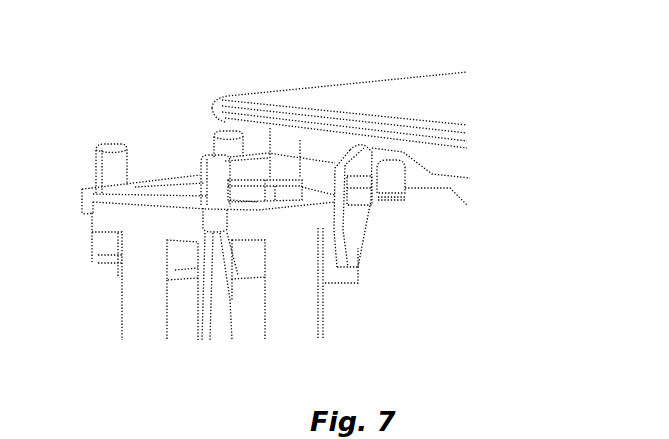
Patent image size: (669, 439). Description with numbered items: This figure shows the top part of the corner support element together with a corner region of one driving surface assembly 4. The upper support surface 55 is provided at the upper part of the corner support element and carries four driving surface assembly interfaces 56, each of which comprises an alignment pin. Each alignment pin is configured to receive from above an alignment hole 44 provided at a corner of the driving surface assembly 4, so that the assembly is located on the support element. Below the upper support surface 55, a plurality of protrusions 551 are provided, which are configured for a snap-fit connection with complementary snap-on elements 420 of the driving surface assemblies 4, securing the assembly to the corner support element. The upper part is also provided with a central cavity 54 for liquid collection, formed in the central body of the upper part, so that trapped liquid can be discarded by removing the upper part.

The driving surface assembly 4 is at (408, 66).
The alignment hole 44 is at (310, 175).
The central cavity 54 is at (262, 174).
The upper support surface 55 is at (142, 186).
The driving surface assembly interface 56 is at (118, 145).
The protrusion 551 is at (102, 240).
The snap-on element 420 is at (357, 248).